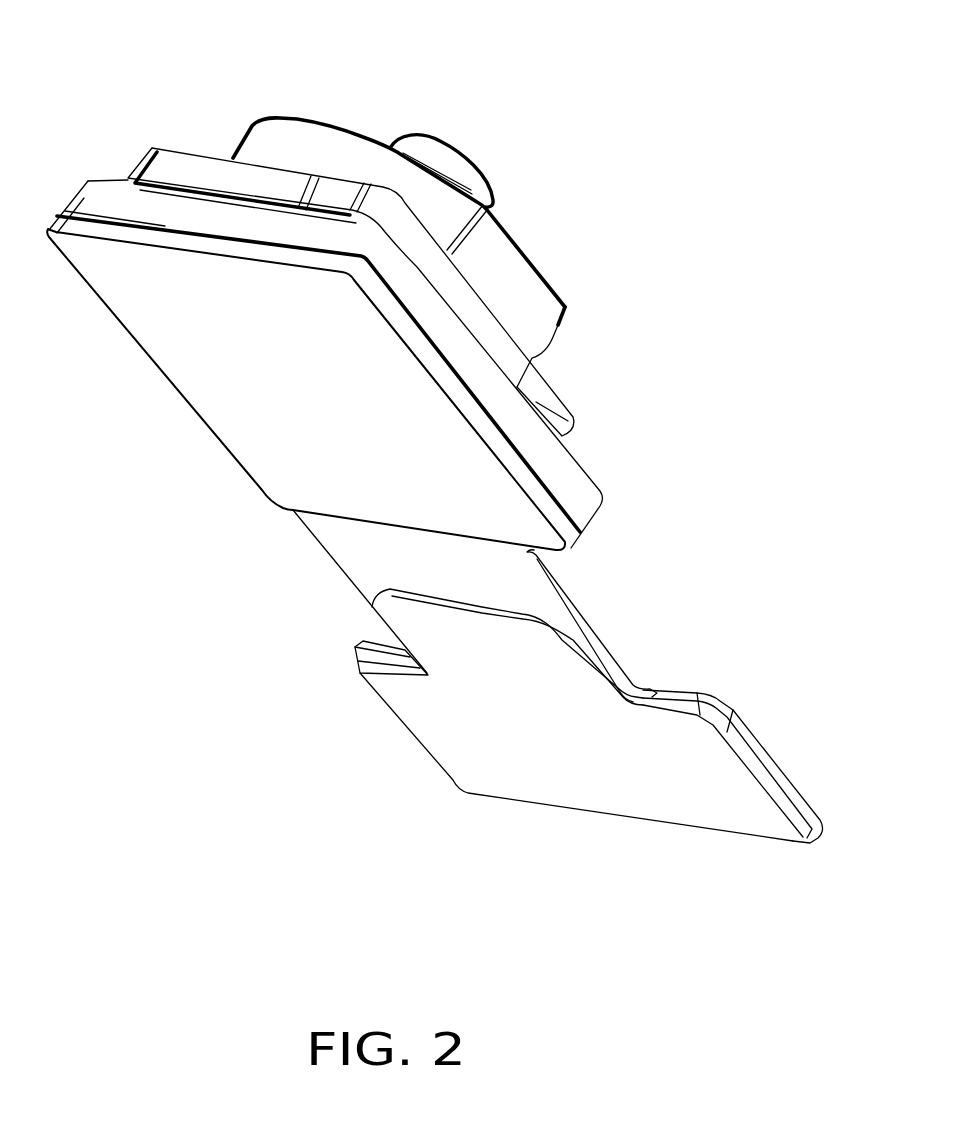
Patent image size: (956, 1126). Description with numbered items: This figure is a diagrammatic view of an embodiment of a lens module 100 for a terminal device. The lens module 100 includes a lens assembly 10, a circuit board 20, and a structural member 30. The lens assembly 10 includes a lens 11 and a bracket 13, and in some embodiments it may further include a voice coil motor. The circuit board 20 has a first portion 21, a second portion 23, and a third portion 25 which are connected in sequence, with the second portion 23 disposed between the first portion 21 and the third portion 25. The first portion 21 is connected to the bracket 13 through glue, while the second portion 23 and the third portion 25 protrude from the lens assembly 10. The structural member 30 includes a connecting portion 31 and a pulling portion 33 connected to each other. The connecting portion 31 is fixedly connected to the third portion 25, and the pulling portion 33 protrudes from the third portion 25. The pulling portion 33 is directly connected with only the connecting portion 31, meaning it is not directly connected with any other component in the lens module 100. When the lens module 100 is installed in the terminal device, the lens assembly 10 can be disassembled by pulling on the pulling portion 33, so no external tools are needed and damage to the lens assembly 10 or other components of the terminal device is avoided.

The lens module 100 is at (316, 37).
The lens assembly 10 is at (593, 199).
The lens 11 is at (508, 252).
The bracket 13 is at (487, 371).
The circuit board 20 is at (670, 496).
The first portion 21 is at (543, 495).
The second portion 23 is at (587, 623).
The third portion 25 is at (740, 733).
The structural member 30 is at (364, 802).
The connecting portion 31 is at (460, 753).
The pulling portion 33 is at (478, 647).